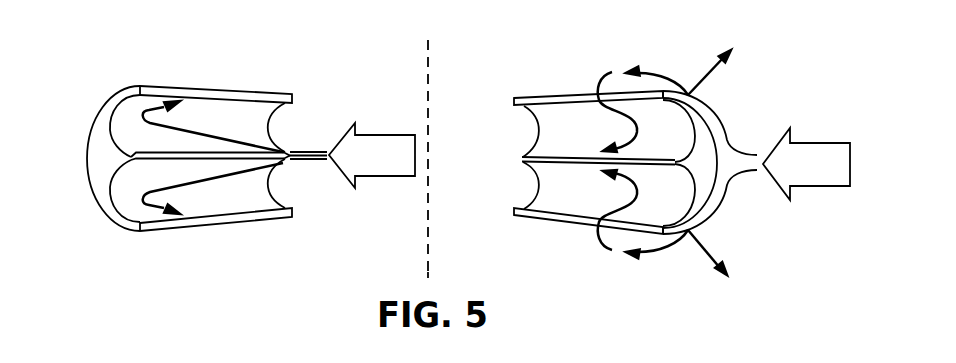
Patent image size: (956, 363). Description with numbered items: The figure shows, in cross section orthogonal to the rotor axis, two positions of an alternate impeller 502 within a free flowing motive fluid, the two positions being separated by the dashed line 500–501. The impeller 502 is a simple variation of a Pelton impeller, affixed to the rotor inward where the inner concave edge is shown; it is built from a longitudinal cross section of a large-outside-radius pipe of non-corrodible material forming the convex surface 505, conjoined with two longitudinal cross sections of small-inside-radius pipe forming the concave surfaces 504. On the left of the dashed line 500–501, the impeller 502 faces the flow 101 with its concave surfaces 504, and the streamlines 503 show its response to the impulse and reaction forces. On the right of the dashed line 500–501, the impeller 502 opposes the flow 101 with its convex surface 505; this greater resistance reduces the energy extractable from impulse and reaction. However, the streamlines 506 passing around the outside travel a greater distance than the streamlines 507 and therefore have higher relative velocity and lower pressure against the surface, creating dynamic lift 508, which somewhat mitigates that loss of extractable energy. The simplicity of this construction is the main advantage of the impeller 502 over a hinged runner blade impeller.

The flow 101 is at (400, 165).
The dashed line endpoint 500 is at (428, 277).
The dashed line endpoint 501 is at (428, 44).
The impeller 502 is at (131, 158).
The streamlines 503 is at (300, 151).
The concave surfaces 504 is at (292, 100).
The convex surface 505 is at (110, 102).
The streamlines 506 is at (706, 100).
The streamlines 507 is at (600, 79).
The dynamic lift 508 is at (696, 159).